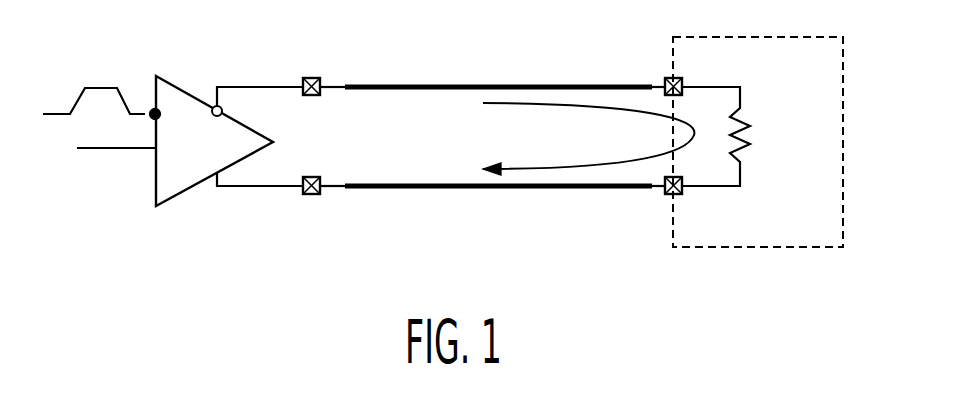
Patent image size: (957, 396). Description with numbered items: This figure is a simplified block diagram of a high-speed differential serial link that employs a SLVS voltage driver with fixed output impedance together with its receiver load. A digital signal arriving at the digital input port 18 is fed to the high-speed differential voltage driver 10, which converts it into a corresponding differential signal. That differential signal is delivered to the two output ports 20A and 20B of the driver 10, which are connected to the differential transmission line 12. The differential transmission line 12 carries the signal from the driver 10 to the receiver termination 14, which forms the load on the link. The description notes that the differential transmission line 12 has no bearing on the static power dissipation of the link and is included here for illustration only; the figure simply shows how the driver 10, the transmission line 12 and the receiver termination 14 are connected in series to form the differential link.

The digital input port 18 is at (147, 100).
The high-speed differential voltage driver 10 is at (175, 172).
The output port 20A is at (311, 78).
The output port 20B is at (311, 194).
The differential transmission line 12 is at (419, 168).
The receiver termination 14 is at (723, 235).